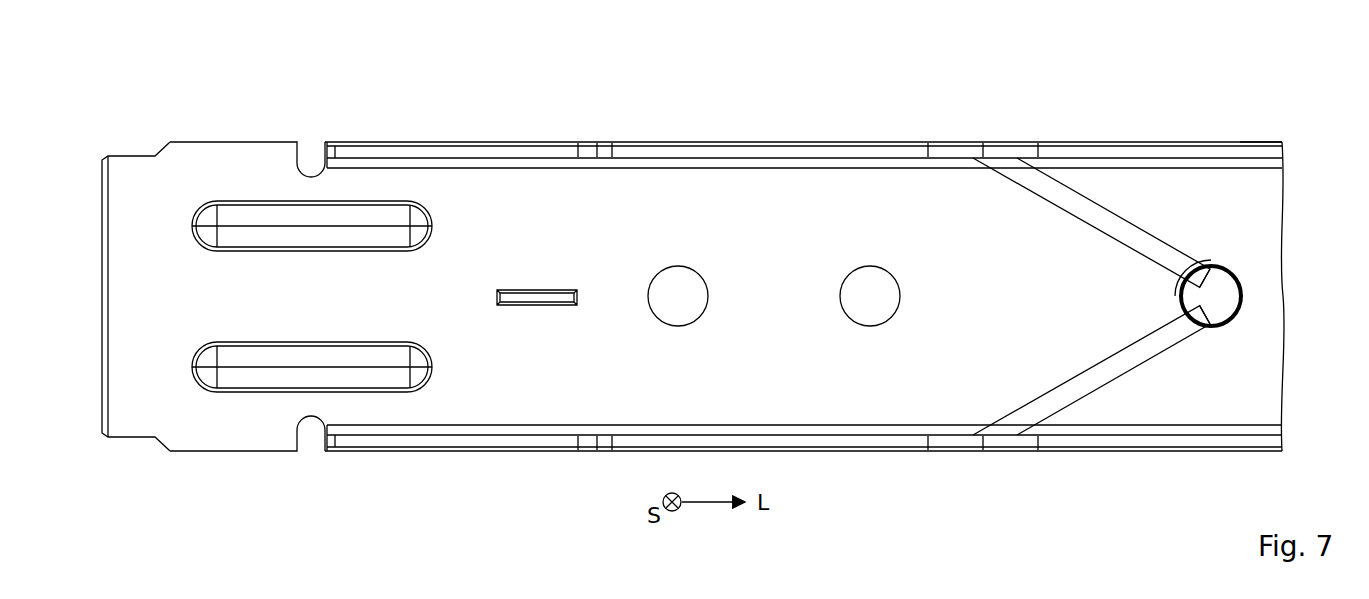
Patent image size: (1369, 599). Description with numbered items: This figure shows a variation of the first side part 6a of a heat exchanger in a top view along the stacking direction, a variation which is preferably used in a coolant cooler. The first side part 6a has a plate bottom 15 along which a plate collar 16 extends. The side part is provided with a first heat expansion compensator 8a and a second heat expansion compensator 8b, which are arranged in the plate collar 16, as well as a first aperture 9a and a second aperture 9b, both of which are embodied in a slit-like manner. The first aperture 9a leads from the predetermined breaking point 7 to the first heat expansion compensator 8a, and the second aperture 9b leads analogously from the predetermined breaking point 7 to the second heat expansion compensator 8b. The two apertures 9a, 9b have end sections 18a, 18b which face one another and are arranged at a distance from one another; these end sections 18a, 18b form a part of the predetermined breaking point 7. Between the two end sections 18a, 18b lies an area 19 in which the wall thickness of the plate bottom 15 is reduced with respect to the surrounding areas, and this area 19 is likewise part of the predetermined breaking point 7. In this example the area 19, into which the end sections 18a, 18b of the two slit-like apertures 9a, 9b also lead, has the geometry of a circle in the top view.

The first side part 6a is at (1300, 158).
The predetermined breaking point 7 is at (1158, 299).
The first heat expansion compensator 8a is at (1016, 128).
The second heat expansion compensator 8b is at (1006, 460).
The first aperture 9a is at (1063, 195).
The second aperture 9b is at (1068, 393).
The plate bottom 15 is at (1263, 247).
The plate collar 16 is at (883, 148).
The first end section 18a is at (1195, 272).
The second end section 18b is at (1206, 318).
The area of reduced wall thickness 19 is at (1252, 296).